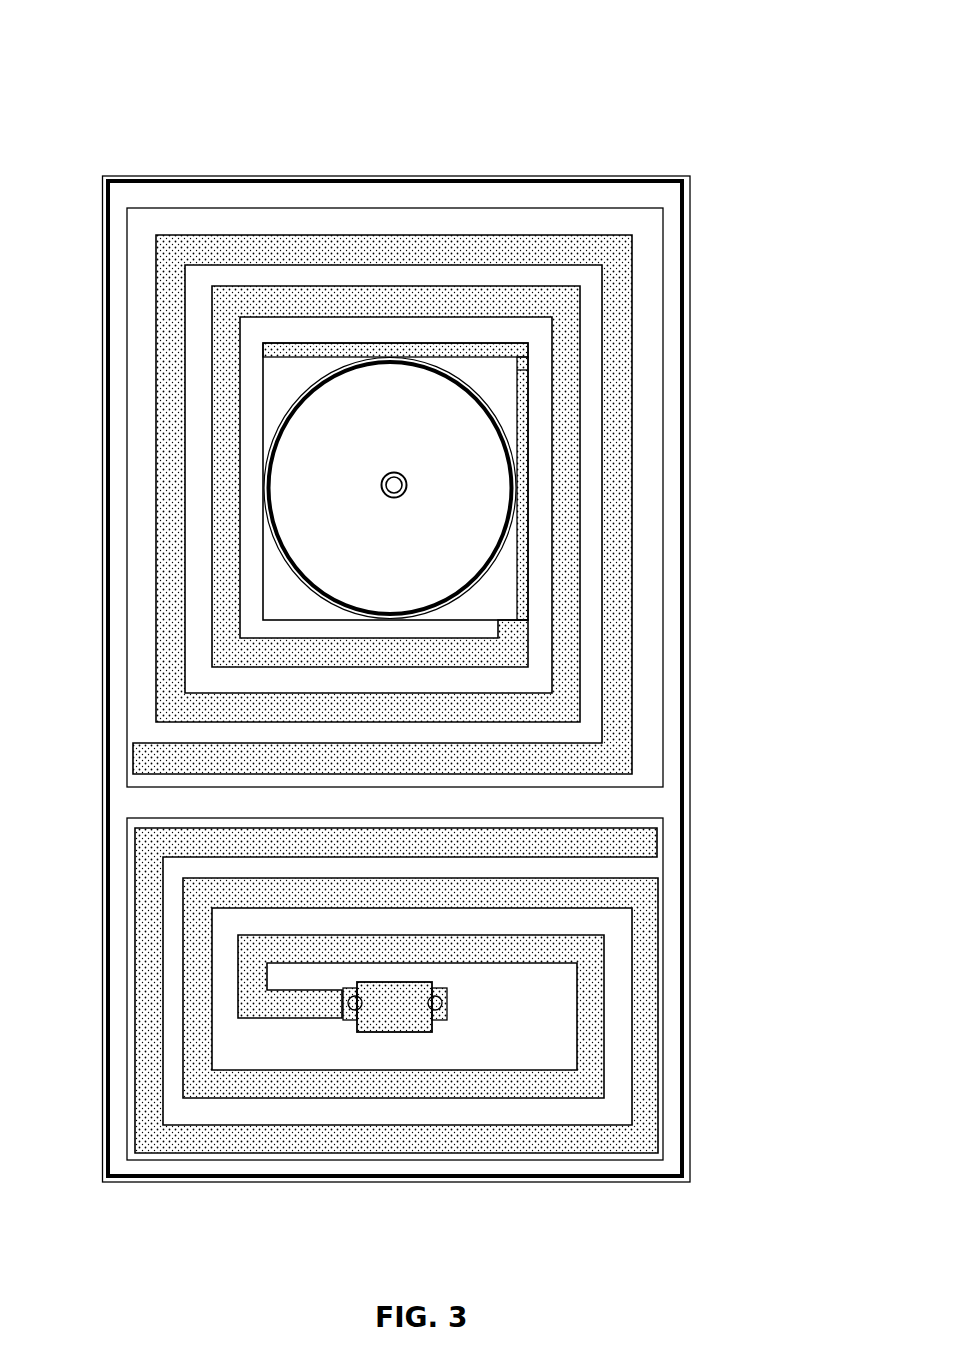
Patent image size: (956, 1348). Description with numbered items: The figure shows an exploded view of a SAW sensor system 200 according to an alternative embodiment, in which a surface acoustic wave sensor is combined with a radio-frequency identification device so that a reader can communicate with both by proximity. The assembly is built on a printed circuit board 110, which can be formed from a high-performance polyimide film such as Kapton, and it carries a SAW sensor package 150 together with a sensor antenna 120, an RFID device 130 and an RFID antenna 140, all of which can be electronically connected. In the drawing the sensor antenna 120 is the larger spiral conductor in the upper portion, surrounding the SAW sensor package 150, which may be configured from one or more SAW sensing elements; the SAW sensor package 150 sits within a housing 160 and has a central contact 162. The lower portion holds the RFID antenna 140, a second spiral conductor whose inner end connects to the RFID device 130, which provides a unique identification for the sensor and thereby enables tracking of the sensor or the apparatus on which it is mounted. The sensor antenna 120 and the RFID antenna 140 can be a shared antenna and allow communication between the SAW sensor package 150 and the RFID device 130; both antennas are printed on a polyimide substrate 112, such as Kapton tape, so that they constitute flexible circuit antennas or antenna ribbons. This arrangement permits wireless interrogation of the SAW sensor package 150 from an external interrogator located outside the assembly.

The SAW sensor system 200 is at (716, 81).
The printed circuit board 110 is at (668, 237).
The polyimide substrate 112 is at (685, 558).
The sensor antenna 120 is at (617, 460).
The RFID device 130 is at (422, 1005).
The RFID antenna 140 is at (645, 1040).
The SAW sensor package 150 is at (284, 396).
The battery holder 160 is at (435, 388).
The battery terminal 162 is at (408, 472).